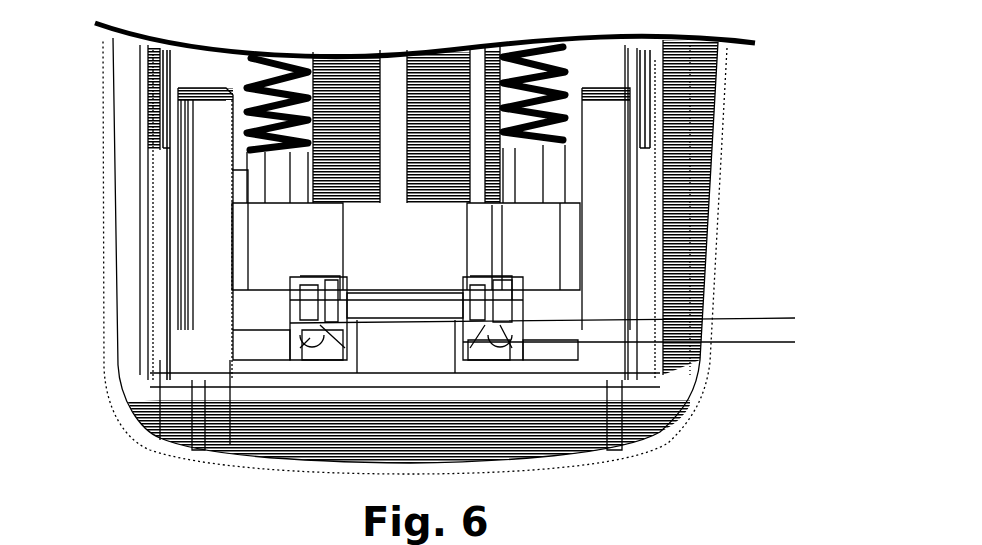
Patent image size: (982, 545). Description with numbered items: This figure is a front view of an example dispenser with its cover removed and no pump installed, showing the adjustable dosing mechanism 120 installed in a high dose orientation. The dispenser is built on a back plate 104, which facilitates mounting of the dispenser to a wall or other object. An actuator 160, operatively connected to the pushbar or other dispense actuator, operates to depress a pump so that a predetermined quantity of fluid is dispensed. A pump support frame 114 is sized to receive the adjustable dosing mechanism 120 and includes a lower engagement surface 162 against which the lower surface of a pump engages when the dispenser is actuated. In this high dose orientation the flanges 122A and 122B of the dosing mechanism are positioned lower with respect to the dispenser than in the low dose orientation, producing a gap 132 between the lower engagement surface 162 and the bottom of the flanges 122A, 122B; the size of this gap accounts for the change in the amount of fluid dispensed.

The back plate 104 is at (720, 128).
The actuator 160 is at (547, 227).
The adjustable dosing mechanism 120 is at (507, 292).
The flange 122A is at (467, 313).
The flange 122B is at (347, 310).
The pump support frame 114 is at (350, 330).
The gap 132 is at (785, 305).
The lower engagement surface 162 is at (450, 345).